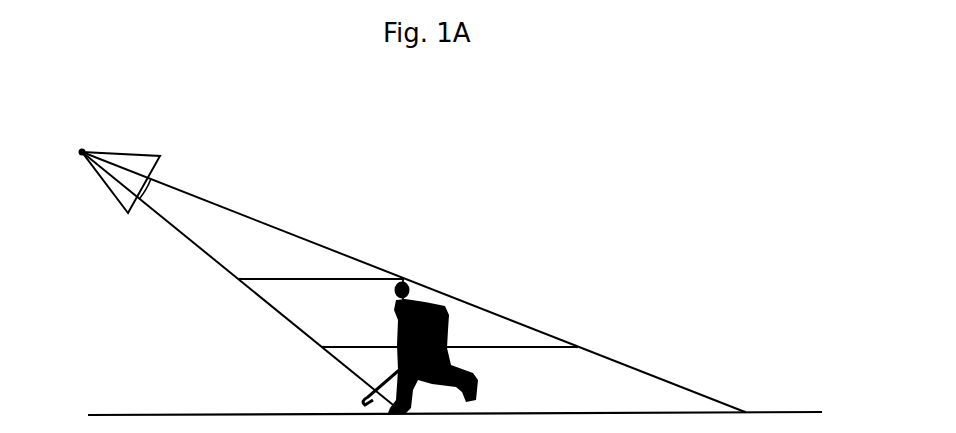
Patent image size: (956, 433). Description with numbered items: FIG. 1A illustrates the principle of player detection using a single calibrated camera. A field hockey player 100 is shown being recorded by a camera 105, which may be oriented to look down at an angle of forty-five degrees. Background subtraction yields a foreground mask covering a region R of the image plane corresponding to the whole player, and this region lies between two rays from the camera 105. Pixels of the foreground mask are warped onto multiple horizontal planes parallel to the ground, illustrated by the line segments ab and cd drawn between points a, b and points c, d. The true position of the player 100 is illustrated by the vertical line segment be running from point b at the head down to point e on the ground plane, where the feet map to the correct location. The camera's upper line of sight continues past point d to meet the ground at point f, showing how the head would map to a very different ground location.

The field hockey player 100 is at (433, 259).
The camera 105 is at (119, 132).
The point a is at (234, 286).
The point b is at (412, 269).
The point c is at (316, 357).
The point d is at (583, 336).
The point e is at (403, 422).
The point f is at (752, 398).